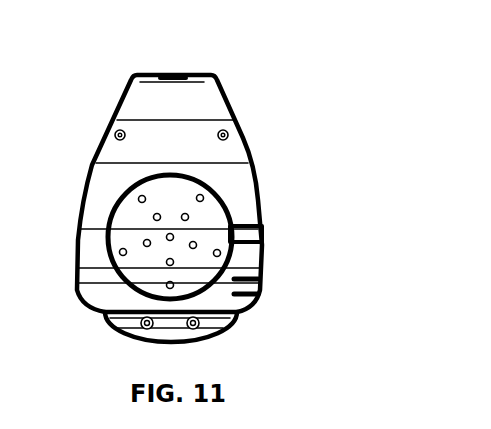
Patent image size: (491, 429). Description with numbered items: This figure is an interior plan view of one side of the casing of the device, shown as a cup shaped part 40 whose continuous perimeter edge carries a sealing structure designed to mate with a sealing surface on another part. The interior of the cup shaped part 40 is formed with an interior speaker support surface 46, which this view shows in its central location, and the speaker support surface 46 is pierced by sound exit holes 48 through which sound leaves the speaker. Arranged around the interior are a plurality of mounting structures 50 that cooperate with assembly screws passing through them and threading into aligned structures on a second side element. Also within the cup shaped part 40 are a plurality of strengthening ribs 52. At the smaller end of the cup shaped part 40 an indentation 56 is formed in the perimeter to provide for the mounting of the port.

The cup shaped part 40 is at (187, 145).
The interior speaker support surface 46 is at (212, 192).
The sound exit holes 48 is at (153, 218).
The mounting structures 50 is at (110, 130).
The strengthening ribs 52 is at (245, 248).
The indentation 56 is at (173, 74).